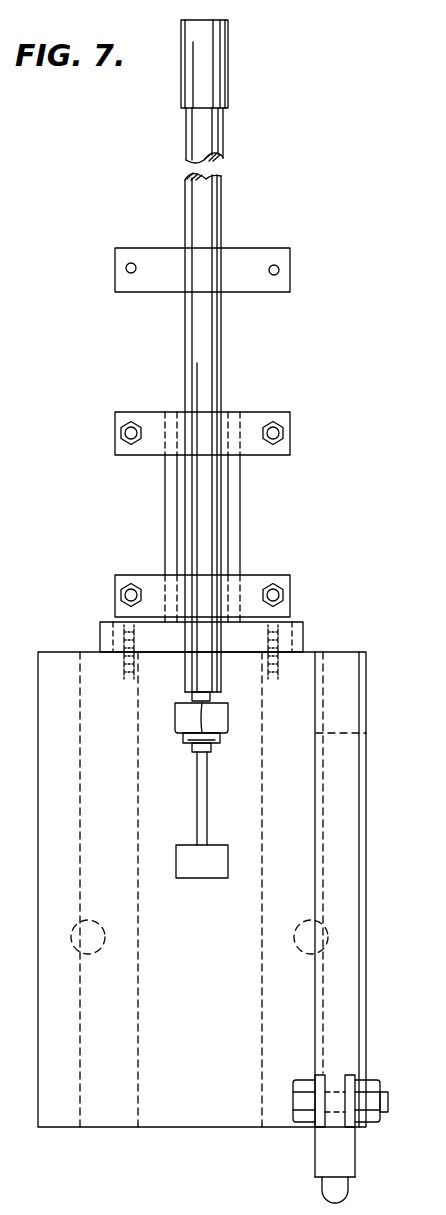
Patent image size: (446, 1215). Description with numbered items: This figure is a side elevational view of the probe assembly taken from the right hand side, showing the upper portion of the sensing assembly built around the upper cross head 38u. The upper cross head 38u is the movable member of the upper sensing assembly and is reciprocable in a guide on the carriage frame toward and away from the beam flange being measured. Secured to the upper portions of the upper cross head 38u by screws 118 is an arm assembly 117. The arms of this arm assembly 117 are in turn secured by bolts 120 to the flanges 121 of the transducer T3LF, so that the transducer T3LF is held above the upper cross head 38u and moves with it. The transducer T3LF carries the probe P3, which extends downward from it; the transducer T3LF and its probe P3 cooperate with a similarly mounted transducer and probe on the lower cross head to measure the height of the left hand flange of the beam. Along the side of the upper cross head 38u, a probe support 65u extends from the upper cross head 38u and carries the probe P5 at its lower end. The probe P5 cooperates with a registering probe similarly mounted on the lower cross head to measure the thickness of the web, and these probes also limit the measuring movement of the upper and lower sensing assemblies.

The transducer T3LF is at (226, 221).
The flanges 121 is at (258, 411).
The bolts 120 is at (121, 433).
The arm assembly 117 is at (244, 514).
The screws 118 is at (112, 633).
The upper cross head 38u is at (178, 1127).
The probe P3 is at (204, 880).
The probe support 65u is at (315, 990).
The probe P5 is at (322, 1194).